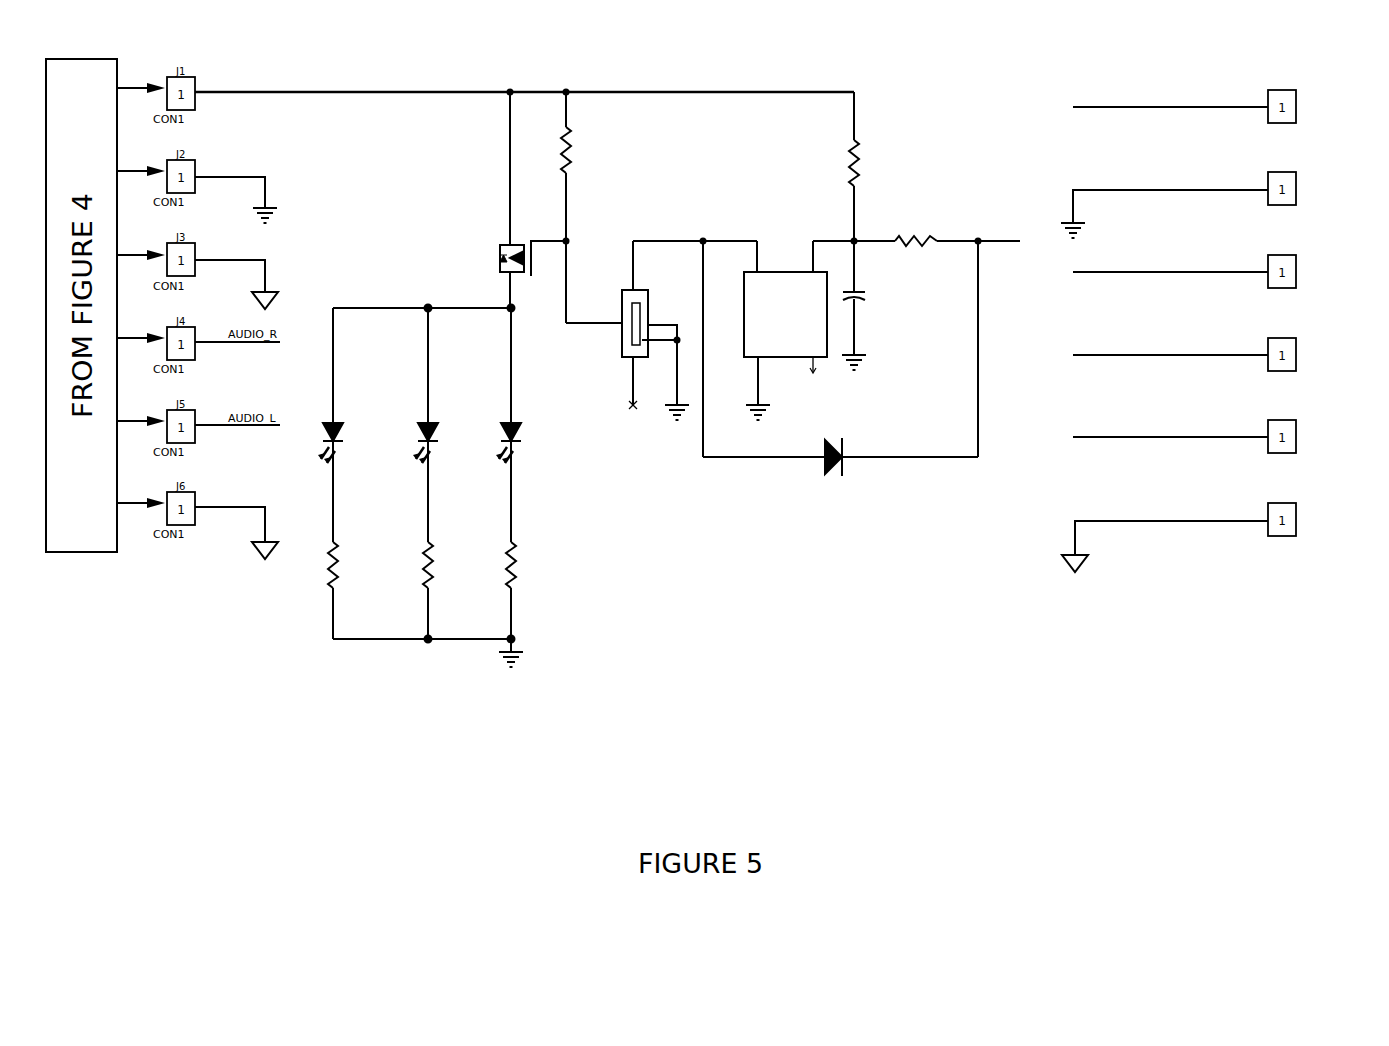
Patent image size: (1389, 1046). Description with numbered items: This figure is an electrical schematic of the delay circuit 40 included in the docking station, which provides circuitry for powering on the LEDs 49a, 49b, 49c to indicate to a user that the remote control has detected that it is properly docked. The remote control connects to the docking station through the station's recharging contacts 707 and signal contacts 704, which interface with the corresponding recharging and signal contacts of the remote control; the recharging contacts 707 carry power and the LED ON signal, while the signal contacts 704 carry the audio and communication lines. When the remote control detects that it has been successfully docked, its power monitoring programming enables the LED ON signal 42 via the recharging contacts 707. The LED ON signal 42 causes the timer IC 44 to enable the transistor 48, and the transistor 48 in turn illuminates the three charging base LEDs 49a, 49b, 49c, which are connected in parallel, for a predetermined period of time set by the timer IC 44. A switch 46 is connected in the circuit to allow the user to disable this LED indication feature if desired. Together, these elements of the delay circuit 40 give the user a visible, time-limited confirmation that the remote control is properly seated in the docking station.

The delay circuit 40 is at (906, 677).
The LED ON signal 42 is at (998, 217).
The timer IC 44 is at (786, 265).
The switch 46 is at (651, 287).
The transistor 48 is at (522, 232).
The LED 49a is at (522, 452).
The LED 49b is at (443, 452).
The LED 49c is at (345, 452).
The recharging contacts 707 is at (1310, 73).
The signal contacts 704 is at (1310, 315).